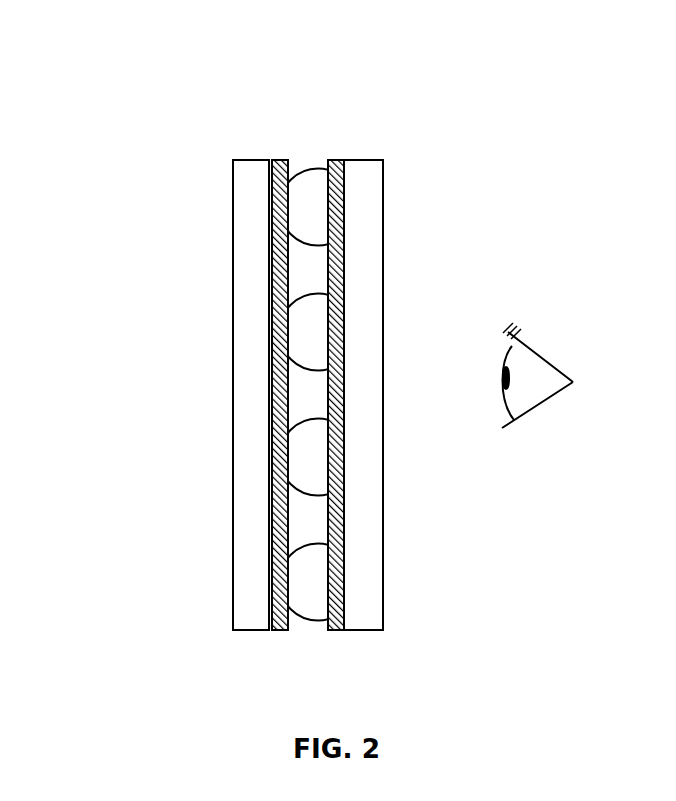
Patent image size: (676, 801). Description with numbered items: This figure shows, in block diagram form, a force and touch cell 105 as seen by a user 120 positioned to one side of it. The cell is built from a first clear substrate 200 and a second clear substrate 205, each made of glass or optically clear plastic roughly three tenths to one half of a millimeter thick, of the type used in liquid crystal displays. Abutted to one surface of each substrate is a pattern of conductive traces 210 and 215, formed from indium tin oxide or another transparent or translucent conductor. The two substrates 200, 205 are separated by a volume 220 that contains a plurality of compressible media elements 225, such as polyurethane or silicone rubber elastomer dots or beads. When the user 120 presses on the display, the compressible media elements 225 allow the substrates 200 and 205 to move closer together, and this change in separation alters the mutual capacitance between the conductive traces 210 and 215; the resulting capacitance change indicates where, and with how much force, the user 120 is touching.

The force and touch cell 105 is at (112, 104).
The user 120 is at (522, 417).
The first clear substrate 200 is at (383, 187).
The second clear substrate 205 is at (247, 630).
The conductive traces 210 is at (337, 160).
The conductive traces 215 is at (278, 630).
The volume 220 is at (299, 151).
The compressible media elements 225 is at (309, 207).